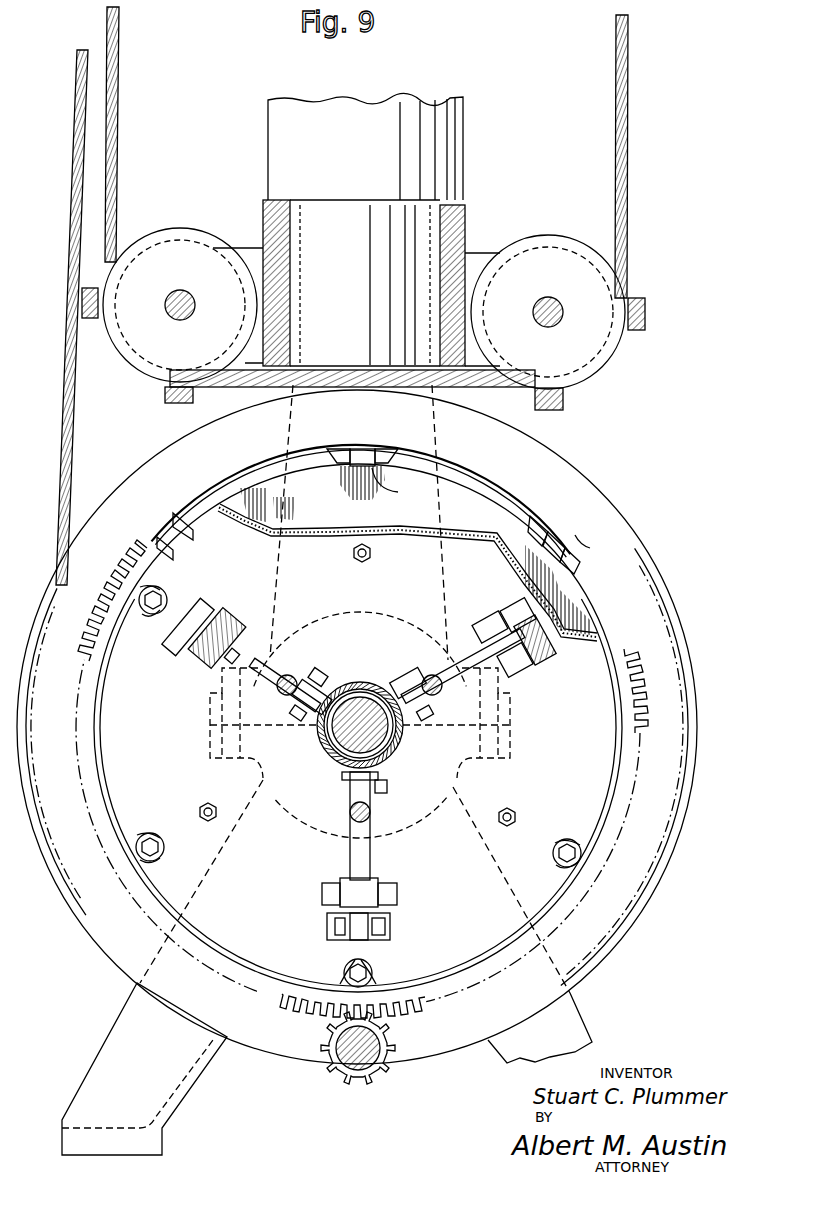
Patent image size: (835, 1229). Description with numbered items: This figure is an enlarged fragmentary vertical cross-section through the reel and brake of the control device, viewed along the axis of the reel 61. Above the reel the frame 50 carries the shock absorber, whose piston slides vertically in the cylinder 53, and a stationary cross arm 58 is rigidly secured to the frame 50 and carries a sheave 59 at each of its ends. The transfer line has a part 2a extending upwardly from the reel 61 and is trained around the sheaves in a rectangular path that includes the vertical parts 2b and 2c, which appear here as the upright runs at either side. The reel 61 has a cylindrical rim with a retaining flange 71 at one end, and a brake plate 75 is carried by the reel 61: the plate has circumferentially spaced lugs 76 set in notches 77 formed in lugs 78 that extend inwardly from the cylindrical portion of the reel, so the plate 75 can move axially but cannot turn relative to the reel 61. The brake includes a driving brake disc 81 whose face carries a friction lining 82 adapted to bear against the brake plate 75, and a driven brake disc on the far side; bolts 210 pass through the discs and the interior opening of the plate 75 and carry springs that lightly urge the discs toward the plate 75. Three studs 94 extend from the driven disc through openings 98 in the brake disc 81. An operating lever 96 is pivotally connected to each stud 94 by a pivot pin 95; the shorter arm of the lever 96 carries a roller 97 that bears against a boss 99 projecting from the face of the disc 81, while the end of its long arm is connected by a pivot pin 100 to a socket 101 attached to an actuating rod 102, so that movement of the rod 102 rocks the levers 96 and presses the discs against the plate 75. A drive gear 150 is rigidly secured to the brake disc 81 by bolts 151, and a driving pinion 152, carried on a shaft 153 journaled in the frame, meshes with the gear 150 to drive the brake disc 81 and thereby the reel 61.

The part of transfer line 2a is at (62, 382).
The vertical part of transfer line 2b is at (630, 128).
The vertical part of transfer line 2c is at (119, 72).
The frame 50 is at (107, 1038).
The cylinder 53 is at (465, 132).
The stationary cross arm 58 is at (262, 250).
The sheave 59 is at (187, 232).
The reel 61 is at (357, 727).
The retaining flange 71 is at (598, 500).
The brake plate 75 is at (470, 498).
The lug 76 is at (376, 480).
The notch 77 is at (362, 448).
The lug 78 is at (336, 452).
The driving brake disc 81 is at (115, 745).
The friction lining 82 is at (322, 528).
The stud 94 is at (222, 628).
The pivot pin 95 is at (485, 614).
The operating lever 96 is at (263, 677).
The roller 97 is at (548, 650).
The opening 98 is at (238, 652).
The boss 99 is at (196, 602).
The pivot pin 100 is at (320, 669).
The socket 101 is at (318, 690).
The actuating rod 102 is at (290, 675).
The drive gear 150 is at (95, 613).
The bolt 151 is at (155, 598).
The driving pinion 152 is at (362, 1082).
The shaft 153 is at (375, 1047).
The bolt 210 is at (372, 553).